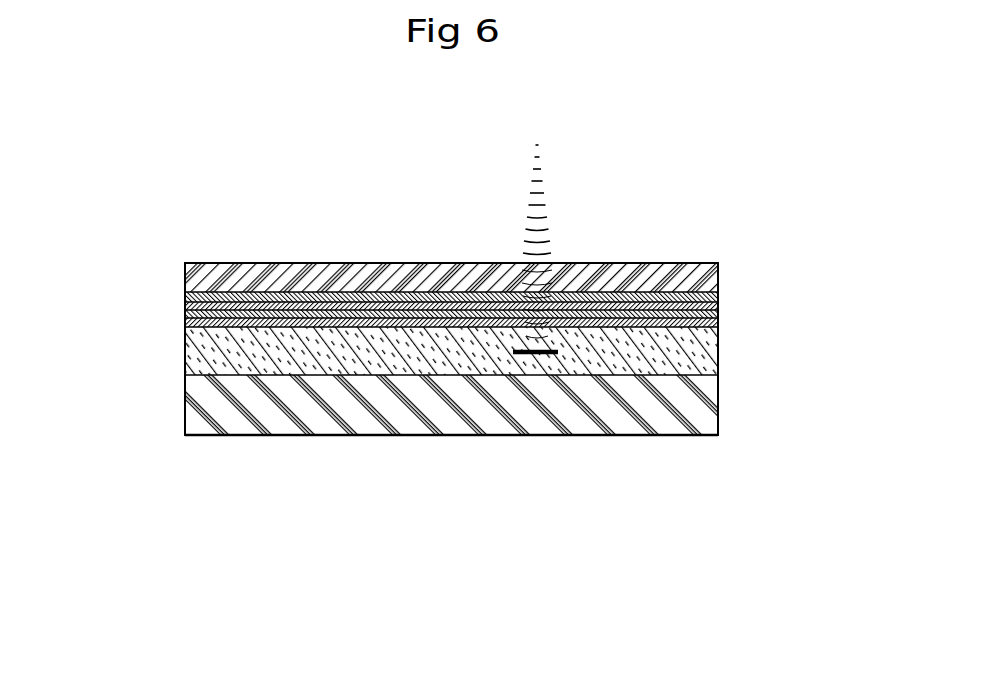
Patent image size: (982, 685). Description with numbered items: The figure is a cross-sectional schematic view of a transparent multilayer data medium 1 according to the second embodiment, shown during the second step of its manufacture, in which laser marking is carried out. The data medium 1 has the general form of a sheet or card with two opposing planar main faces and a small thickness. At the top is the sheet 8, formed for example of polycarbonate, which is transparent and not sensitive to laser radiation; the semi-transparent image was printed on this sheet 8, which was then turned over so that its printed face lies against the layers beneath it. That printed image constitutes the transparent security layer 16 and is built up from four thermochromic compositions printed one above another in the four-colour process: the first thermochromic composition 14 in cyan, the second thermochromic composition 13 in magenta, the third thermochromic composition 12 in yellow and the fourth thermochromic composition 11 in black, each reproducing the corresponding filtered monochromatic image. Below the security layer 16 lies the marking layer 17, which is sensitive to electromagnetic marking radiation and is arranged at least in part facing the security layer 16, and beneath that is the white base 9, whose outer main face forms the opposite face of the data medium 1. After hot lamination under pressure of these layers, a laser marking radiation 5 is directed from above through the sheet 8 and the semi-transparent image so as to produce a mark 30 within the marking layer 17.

The multilayer data medium 1 is at (173, 231).
The marking radiation 5 is at (537, 240).
The sheet 8 is at (363, 275).
The base 9 is at (363, 425).
The fourth thermochromic composition 11 is at (682, 297).
The third thermochromic composition 12 is at (695, 306).
The second thermochromic composition 13 is at (697, 317).
The first thermochromic composition 14 is at (697, 325).
The security layer 16 is at (177, 293).
The marking layer 17 is at (697, 360).
The mark 30 is at (527, 356).